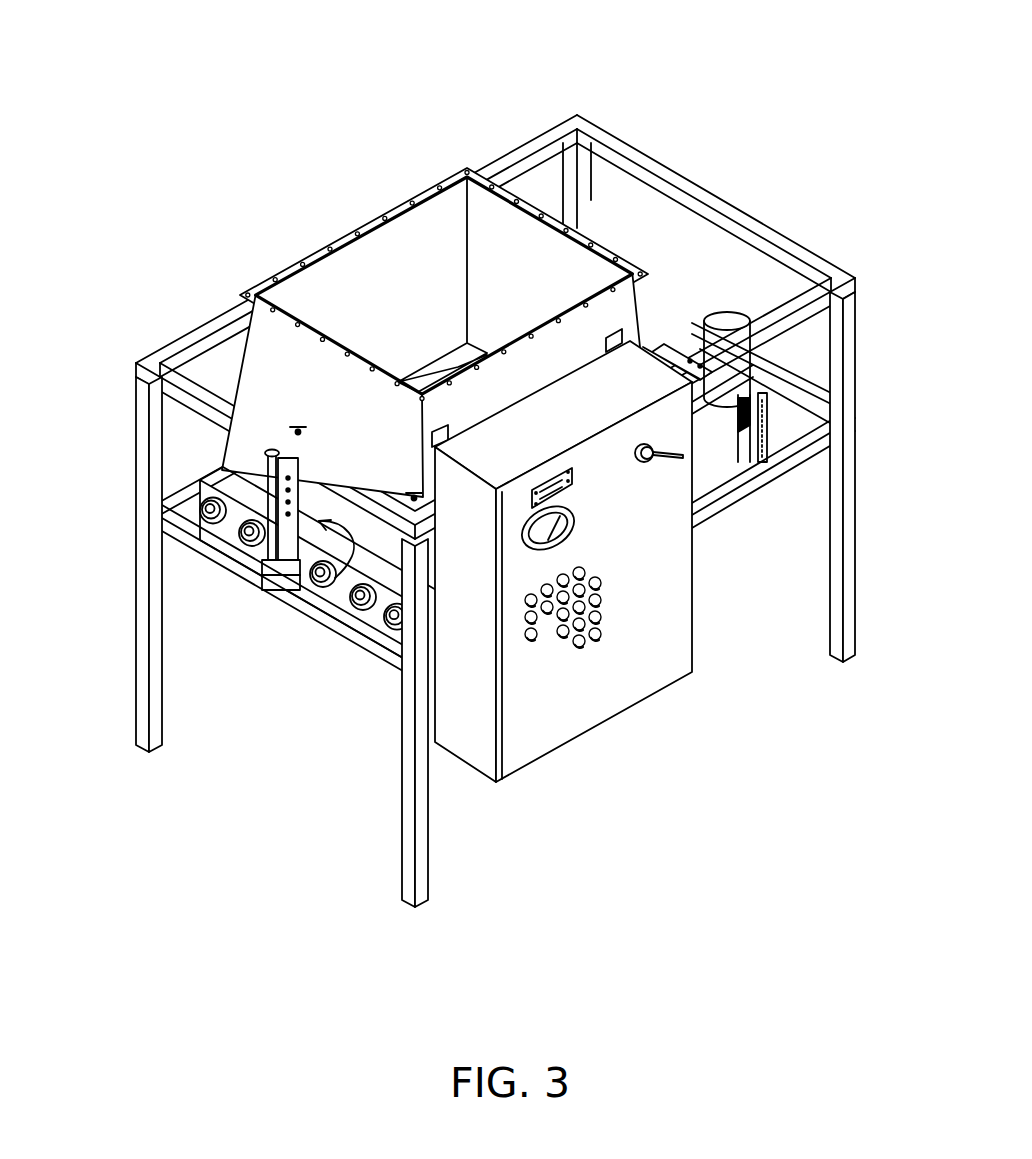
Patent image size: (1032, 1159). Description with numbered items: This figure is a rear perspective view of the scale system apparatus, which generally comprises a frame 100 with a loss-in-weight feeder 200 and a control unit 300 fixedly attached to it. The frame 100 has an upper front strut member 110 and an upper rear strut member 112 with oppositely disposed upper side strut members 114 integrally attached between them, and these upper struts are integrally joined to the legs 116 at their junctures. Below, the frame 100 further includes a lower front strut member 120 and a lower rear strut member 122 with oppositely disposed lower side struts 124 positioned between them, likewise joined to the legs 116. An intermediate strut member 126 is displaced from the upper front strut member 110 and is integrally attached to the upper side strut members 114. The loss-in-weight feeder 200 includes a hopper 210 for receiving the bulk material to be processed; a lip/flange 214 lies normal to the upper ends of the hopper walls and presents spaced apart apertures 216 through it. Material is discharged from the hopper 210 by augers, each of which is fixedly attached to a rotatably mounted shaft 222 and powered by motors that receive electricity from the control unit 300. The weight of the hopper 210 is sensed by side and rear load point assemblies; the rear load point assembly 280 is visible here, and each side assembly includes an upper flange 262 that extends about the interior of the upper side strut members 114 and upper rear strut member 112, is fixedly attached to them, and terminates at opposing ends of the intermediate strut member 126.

The frame 100 is at (651, 103).
The upper front strut member 110 is at (719, 203).
The upper rear strut member 112 is at (158, 387).
The upper side strut members 114 is at (500, 160).
The legs 116 is at (580, 222).
The lower front strut member 120 is at (807, 404).
The lower rear strut member 122 is at (342, 640).
The lower side struts 124 is at (180, 490).
The intermediate strut member 126 is at (674, 337).
The loss-in-weight feeder 200 is at (268, 103).
The hopper 210 is at (357, 260).
The lip/flange 214 is at (417, 195).
The apertures 216 is at (275, 276).
The shaft 222 is at (211, 522).
The upper flange 262 is at (197, 365).
The rear load point assembly 280 is at (314, 590).
The control unit 300 is at (582, 713).